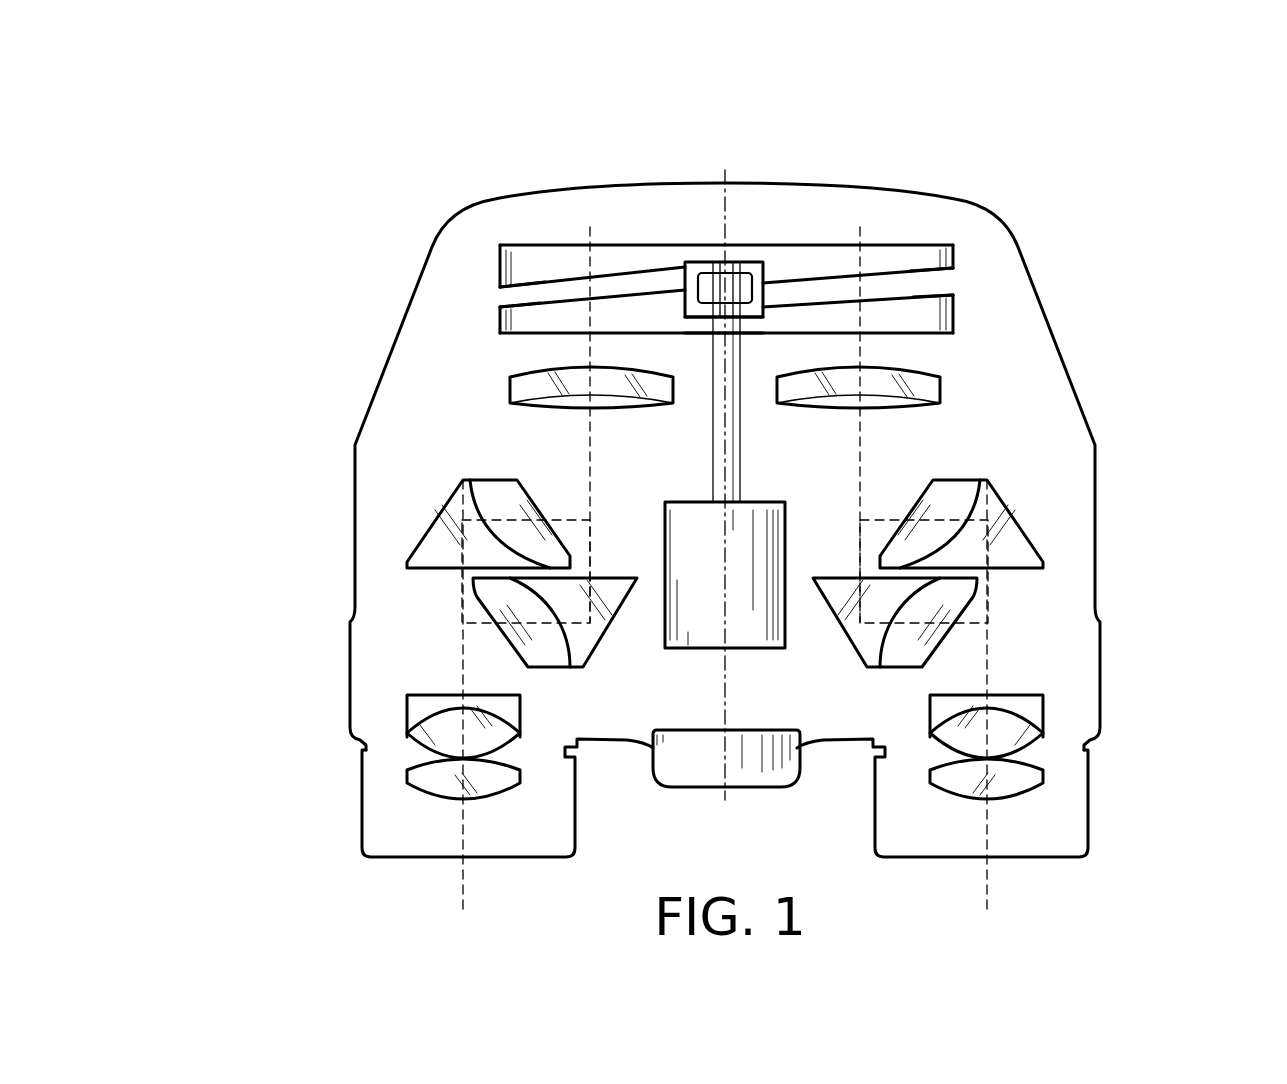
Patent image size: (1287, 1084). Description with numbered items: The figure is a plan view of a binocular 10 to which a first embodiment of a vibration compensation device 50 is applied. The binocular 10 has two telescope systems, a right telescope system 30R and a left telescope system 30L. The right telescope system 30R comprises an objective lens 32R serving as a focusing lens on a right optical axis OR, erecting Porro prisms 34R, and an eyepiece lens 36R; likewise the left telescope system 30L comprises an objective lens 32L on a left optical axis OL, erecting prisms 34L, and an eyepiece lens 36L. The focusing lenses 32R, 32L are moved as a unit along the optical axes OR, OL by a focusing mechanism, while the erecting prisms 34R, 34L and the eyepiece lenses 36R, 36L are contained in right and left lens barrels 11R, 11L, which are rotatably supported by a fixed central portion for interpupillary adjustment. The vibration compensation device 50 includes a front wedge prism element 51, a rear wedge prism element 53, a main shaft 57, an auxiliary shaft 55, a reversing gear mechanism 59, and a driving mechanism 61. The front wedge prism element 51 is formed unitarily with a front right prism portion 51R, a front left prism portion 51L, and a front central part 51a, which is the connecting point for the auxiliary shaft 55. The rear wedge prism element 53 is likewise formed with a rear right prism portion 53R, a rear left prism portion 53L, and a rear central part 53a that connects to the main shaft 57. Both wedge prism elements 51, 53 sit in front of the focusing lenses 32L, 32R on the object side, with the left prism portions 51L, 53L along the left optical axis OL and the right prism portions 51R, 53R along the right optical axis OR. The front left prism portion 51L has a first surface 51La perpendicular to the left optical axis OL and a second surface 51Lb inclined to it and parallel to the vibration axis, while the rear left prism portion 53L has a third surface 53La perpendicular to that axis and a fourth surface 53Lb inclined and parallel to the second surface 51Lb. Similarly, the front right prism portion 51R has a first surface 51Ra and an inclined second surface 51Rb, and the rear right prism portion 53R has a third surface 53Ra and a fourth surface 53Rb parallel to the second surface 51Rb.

The binocular 10 is at (817, 116).
The left lens barrel 11L is at (373, 838).
The right lens barrel 11R is at (1077, 838).
The left telescope system 30L is at (273, 455).
The right telescope system 30R is at (1177, 451).
The left objective lens 32L is at (497, 363).
The right objective lens 32R is at (953, 361).
The left erecting prisms 34L is at (493, 667).
The right erecting prisms 34R is at (957, 667).
The left eyepiece lens 36L is at (403, 800).
The right eyepiece lens 36R is at (1047, 800).
The left optical axis OL is at (590, 468).
The right optical axis OR is at (860, 468).
The vibration compensation device 50 is at (733, 188).
The front wedge prism element 51 is at (652, 260).
The front left prism portion 51L is at (617, 250).
The front right prism portion 51R is at (872, 250).
The front central part 51a is at (708, 256).
The first surface 51La is at (548, 246).
The second surface 51Lb is at (545, 300).
The first surface 51Ra is at (905, 218).
The second surface 51Rb is at (923, 272).
The rear wedge prism element 53 is at (833, 322).
The rear left prism portion 53L is at (612, 323).
The rear right prism portion 53R is at (842, 327).
The rear central part 53a is at (751, 324).
The third surface 53La is at (517, 336).
The fourth surface 53Lb is at (513, 320).
The third surface 53Ra is at (945, 337).
The fourth surface 53Rb is at (933, 296).
The auxiliary shaft 55 is at (728, 263).
The main shaft 57 is at (713, 472).
The reversing gear mechanism 59 is at (752, 280).
The driving mechanism 61 is at (745, 632).